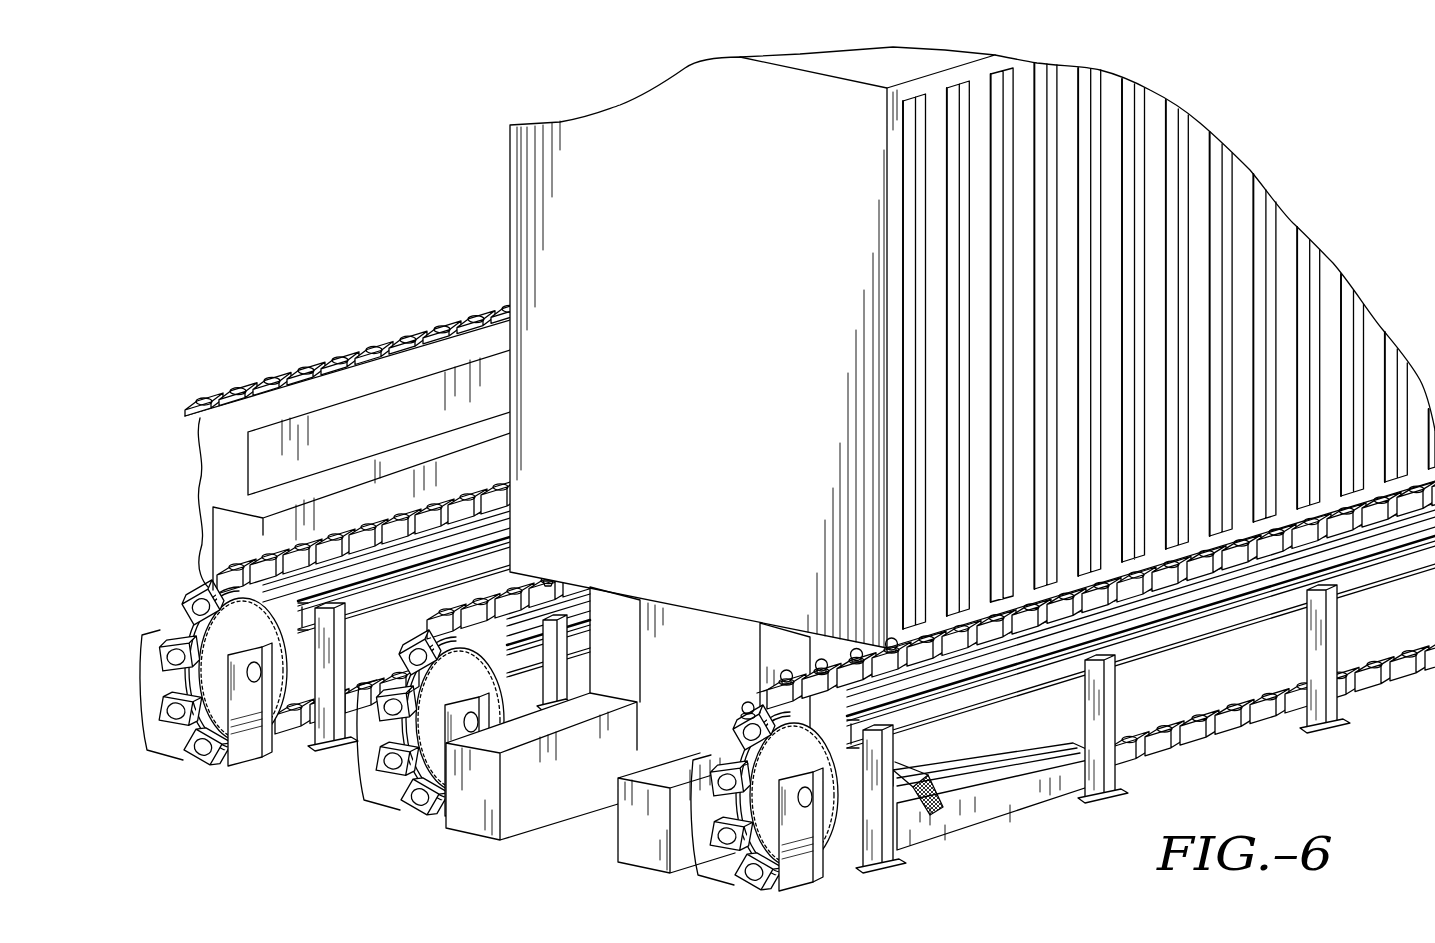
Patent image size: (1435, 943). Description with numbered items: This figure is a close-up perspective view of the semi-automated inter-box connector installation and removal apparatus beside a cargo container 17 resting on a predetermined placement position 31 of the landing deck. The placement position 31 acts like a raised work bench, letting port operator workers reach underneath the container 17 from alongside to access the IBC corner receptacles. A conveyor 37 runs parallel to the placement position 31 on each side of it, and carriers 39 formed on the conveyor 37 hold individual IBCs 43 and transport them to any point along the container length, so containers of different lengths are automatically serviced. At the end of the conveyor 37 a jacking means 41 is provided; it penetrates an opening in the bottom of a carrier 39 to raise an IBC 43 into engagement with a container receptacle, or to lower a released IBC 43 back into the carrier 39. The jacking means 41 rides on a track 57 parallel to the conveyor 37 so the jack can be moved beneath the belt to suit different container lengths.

The cargo container 17 is at (607, 140).
The predetermined placement position 31 is at (401, 458).
The conveyor 37 is at (392, 730).
The carrier 39 is at (708, 760).
The jacking means 41 is at (937, 813).
The IBC 43 is at (741, 705).
The track 57 is at (1011, 759).